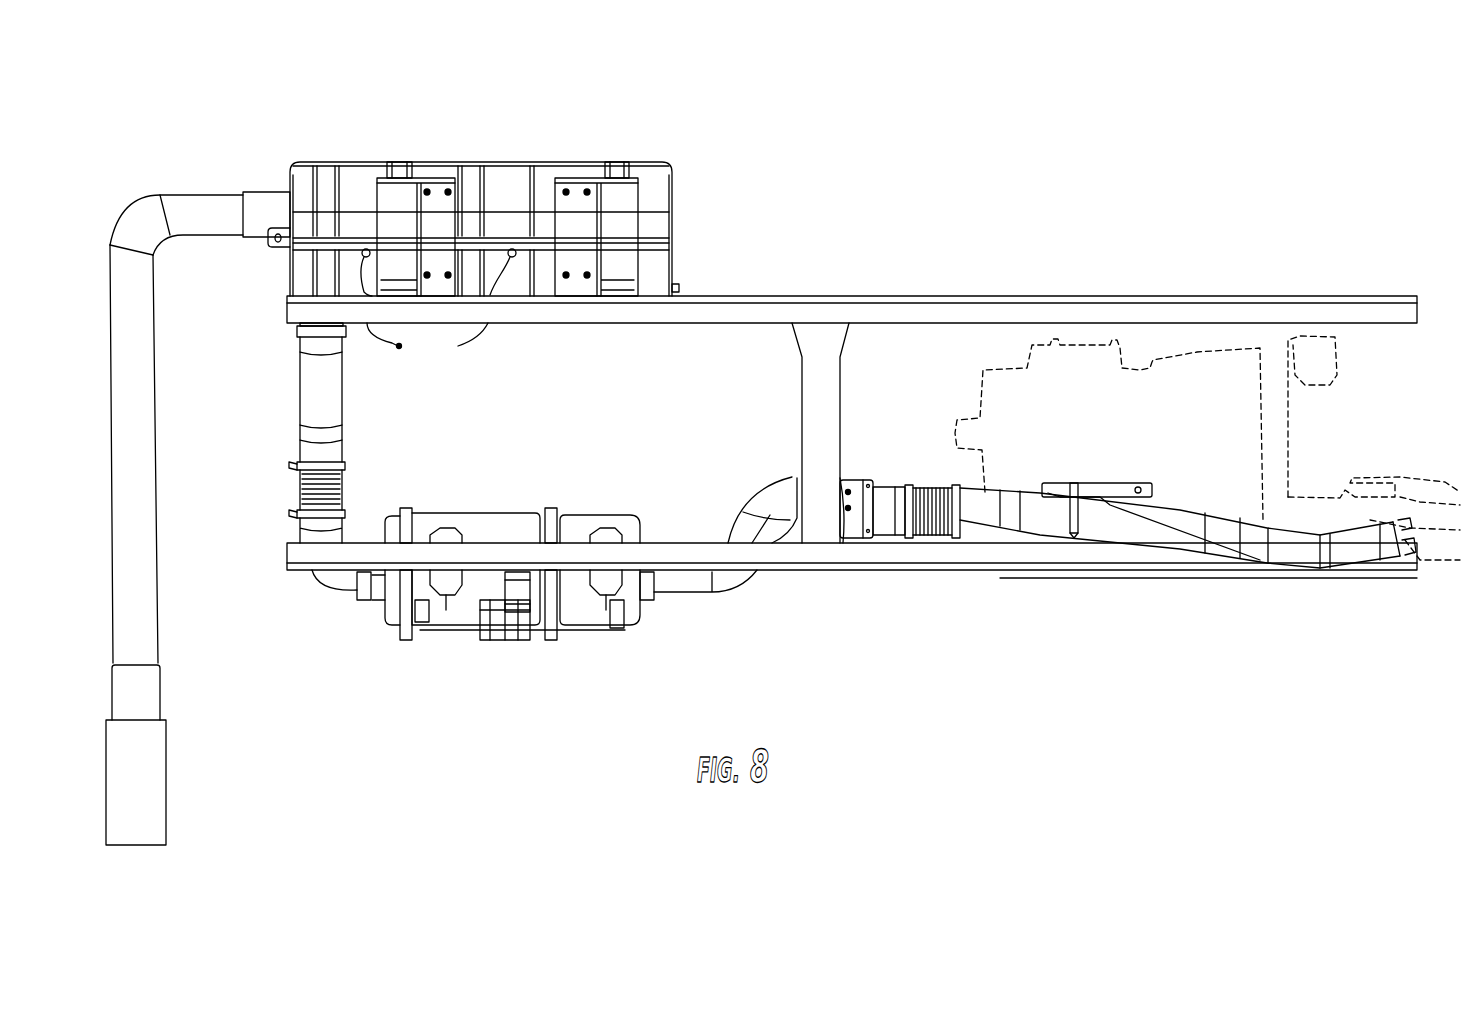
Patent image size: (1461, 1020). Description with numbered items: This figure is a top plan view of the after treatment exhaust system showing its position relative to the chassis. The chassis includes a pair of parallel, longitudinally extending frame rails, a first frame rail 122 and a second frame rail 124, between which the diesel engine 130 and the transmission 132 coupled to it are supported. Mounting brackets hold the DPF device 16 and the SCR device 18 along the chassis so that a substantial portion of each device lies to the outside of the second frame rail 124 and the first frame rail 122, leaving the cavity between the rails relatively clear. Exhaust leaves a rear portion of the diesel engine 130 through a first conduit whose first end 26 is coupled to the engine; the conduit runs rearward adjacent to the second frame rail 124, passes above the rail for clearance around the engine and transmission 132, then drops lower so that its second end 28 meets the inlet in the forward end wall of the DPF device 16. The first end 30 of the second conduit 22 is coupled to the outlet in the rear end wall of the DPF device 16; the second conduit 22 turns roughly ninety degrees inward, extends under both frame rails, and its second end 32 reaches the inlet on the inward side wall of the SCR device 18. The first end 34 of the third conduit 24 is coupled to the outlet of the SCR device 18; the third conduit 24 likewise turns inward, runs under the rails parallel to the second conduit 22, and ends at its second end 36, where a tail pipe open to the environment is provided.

The diesel particulate filter (DPF) device 16 is at (578, 618).
The selective catalytic reduction converter (SCR) device 18 is at (650, 172).
The second conduit 22 is at (327, 385).
The third conduit 24 is at (146, 456).
The first end of first conduit 26 is at (1393, 544).
The second end of first conduit 28 is at (665, 584).
The first end of second conduit 30 is at (352, 585).
The second end of second conduit 32 is at (313, 353).
The first end of third conduit 34 is at (221, 203).
The second end of third conduit 36 is at (151, 696).
The first frame rail 122 is at (820, 312).
The second frame rail 124 is at (887, 557).
The diesel engine 130 is at (1432, 500).
The transmission 132 is at (1225, 370).